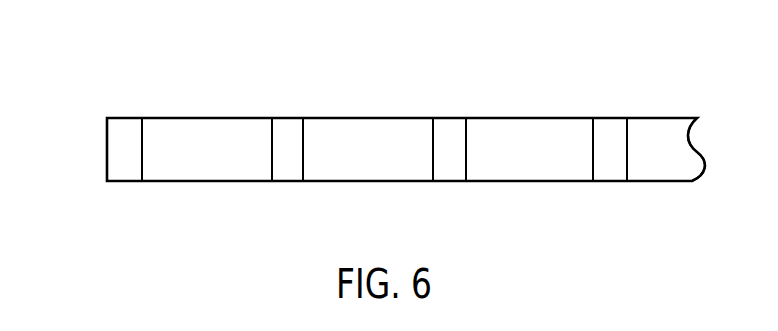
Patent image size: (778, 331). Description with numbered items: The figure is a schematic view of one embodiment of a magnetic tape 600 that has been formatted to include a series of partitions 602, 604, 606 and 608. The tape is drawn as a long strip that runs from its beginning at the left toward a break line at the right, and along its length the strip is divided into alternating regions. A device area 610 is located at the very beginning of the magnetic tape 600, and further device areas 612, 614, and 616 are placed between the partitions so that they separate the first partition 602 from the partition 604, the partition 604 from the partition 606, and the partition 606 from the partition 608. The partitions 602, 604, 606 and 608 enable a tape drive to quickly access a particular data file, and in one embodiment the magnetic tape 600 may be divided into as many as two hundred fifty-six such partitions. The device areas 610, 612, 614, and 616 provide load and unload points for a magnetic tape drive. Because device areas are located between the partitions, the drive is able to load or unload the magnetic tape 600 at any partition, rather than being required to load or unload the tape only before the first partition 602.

The magnetic tape 600 is at (103, 80).
The partition 602 is at (207, 182).
The partition 604 is at (378, 182).
The partition 606 is at (530, 182).
The partition 608 is at (673, 182).
The device area 610 is at (122, 182).
The device area 612 is at (285, 182).
The device area 614 is at (452, 182).
The device area 616 is at (608, 182).